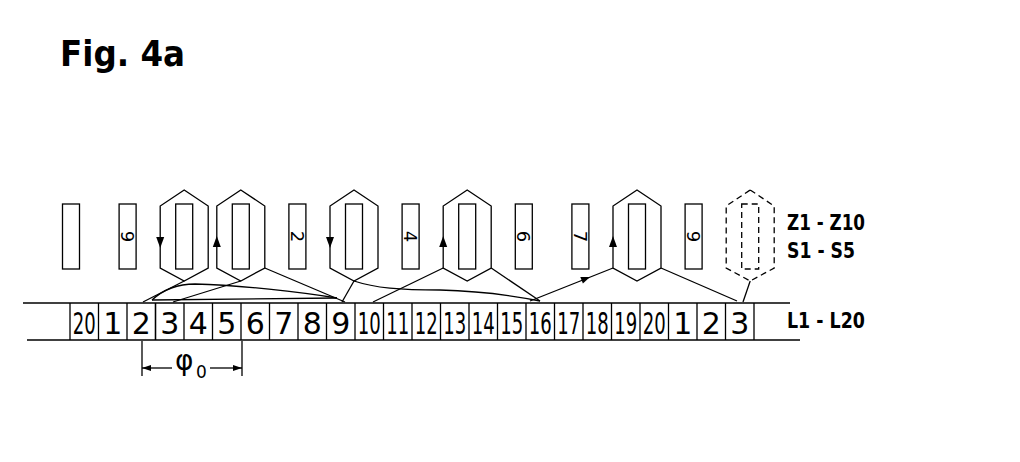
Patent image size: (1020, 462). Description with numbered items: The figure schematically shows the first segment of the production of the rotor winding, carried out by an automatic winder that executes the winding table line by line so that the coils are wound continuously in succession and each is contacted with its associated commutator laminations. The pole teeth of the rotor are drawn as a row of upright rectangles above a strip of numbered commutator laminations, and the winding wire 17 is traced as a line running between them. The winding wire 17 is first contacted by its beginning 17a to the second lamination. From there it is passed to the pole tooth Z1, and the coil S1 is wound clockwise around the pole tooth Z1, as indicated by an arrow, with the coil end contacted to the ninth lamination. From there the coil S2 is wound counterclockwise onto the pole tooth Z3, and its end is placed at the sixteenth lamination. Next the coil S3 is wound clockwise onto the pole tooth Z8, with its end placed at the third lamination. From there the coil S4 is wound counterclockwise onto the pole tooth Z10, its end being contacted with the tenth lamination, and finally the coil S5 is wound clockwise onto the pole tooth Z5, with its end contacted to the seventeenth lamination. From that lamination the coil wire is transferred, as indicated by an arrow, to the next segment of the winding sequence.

The winding wire 17 is at (143, 302).
The beginning of the winding wire 17a is at (143, 302).
The coil S1 is at (241, 190).
The coil S2 is at (354, 190).
The coil S3 is at (637, 190).
The coil S4 is at (184, 190).
The coil S5 is at (467, 190).
The pole tooth Z1 is at (242, 204).
The pole tooth Z3 is at (356, 204).
The pole tooth Z5 is at (468, 204).
The pole tooth Z8 is at (639, 204).
The pole tooth Z10 is at (185, 204).